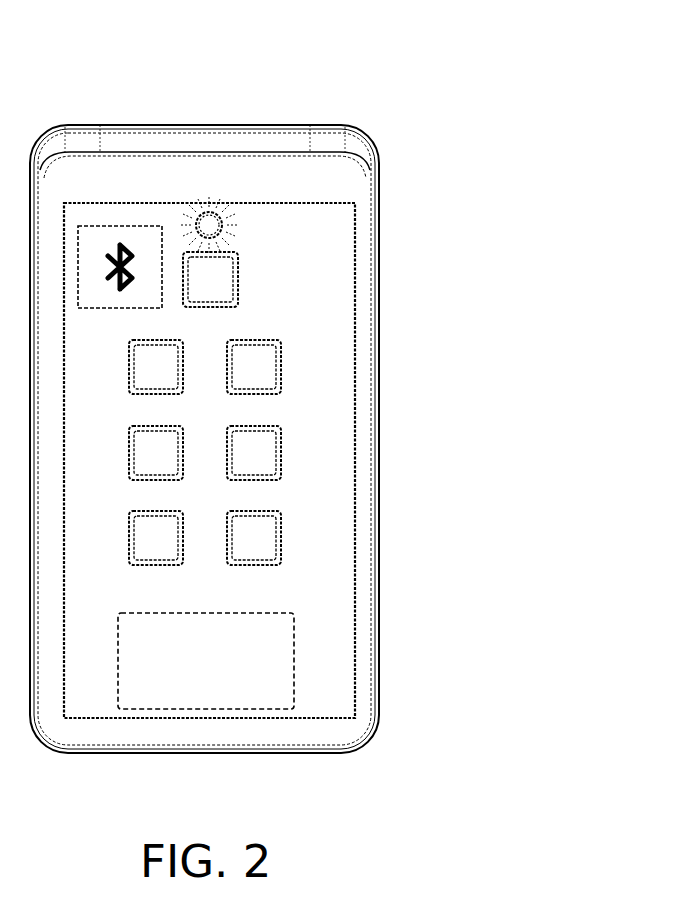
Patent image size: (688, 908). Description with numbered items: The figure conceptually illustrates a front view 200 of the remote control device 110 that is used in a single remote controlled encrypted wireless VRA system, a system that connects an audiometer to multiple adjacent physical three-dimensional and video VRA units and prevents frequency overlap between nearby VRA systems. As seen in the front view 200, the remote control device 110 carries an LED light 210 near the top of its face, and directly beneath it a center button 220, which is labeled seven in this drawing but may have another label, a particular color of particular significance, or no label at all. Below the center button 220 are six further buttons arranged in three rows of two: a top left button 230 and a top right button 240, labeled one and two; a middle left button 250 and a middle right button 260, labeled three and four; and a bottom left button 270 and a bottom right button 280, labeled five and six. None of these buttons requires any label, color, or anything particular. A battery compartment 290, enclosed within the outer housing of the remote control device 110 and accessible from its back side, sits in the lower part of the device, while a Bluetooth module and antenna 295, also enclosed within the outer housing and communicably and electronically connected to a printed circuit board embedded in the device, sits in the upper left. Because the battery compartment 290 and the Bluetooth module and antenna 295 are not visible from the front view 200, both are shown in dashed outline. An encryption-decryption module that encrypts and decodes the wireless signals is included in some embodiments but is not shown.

The front view 200 is at (440, 113).
The remote control device 110 is at (365, 229).
The LED light 210 is at (222, 232).
The center button 220 is at (225, 278).
The top left button 230 is at (150, 368).
The top right button 240 is at (268, 370).
The middle left button 250 is at (150, 444).
The middle right button 260 is at (268, 442).
The bottom left button 270 is at (150, 538).
The bottom right button 280 is at (268, 527).
The battery compartment 290 is at (288, 661).
The Bluetooth module and antenna 295 is at (131, 310).